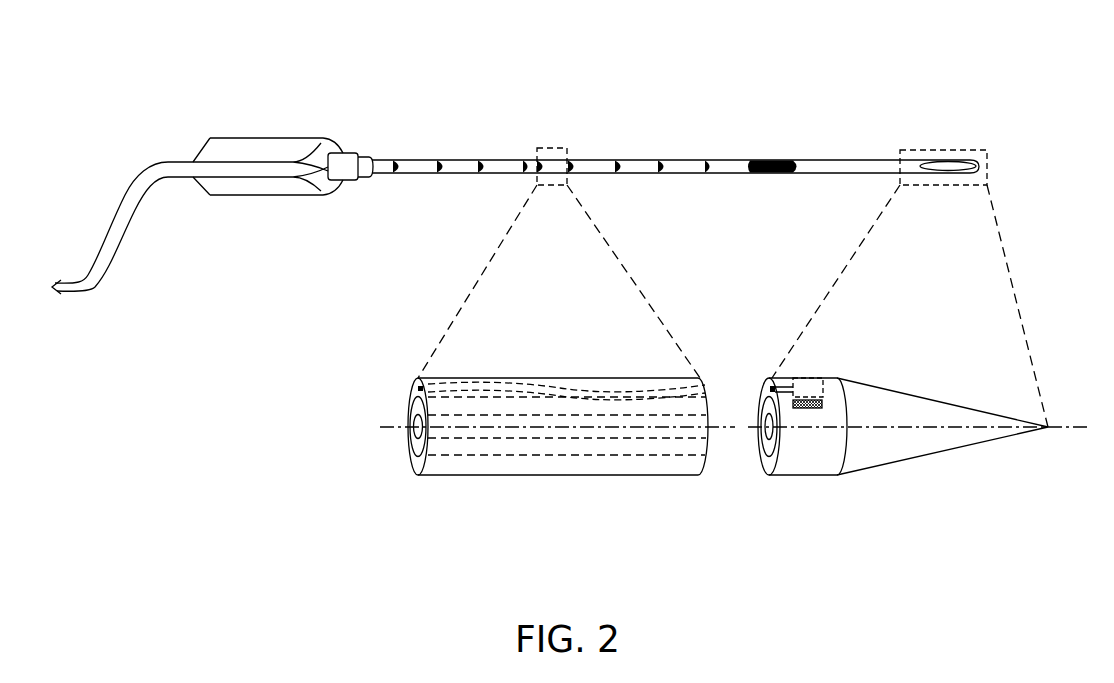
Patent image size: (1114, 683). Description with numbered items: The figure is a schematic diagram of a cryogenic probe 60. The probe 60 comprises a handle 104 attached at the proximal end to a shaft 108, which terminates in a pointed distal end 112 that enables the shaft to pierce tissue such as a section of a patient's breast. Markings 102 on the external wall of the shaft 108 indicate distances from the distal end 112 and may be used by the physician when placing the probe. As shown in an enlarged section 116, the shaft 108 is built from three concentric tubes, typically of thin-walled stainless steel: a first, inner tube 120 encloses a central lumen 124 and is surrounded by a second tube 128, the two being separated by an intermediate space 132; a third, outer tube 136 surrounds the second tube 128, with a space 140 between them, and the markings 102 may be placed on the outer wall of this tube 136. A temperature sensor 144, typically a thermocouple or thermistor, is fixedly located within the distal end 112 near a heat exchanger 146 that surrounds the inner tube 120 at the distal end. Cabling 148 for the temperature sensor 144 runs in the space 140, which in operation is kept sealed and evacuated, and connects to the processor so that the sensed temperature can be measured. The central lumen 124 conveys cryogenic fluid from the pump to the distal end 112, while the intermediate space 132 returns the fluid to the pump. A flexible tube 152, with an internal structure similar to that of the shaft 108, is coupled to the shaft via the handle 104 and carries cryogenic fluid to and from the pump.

The probe 60 is at (410, 90).
The markings 102 is at (618, 162).
The handle 104 is at (257, 147).
The shaft 108 is at (510, 163).
The pointed distal end 112 is at (953, 162).
The section 116 is at (590, 497).
The inner tube 120 is at (450, 440).
The central lumen 124 is at (500, 428).
The second tube 128 is at (643, 455).
The intermediate space 132 is at (682, 447).
The outer tube 136 is at (508, 383).
The space 140 is at (557, 383).
The temperature sensor 144 is at (823, 383).
The heat exchanger 146 is at (808, 408).
The cabling 148 is at (783, 383).
The flexible tube 152 is at (83, 293).